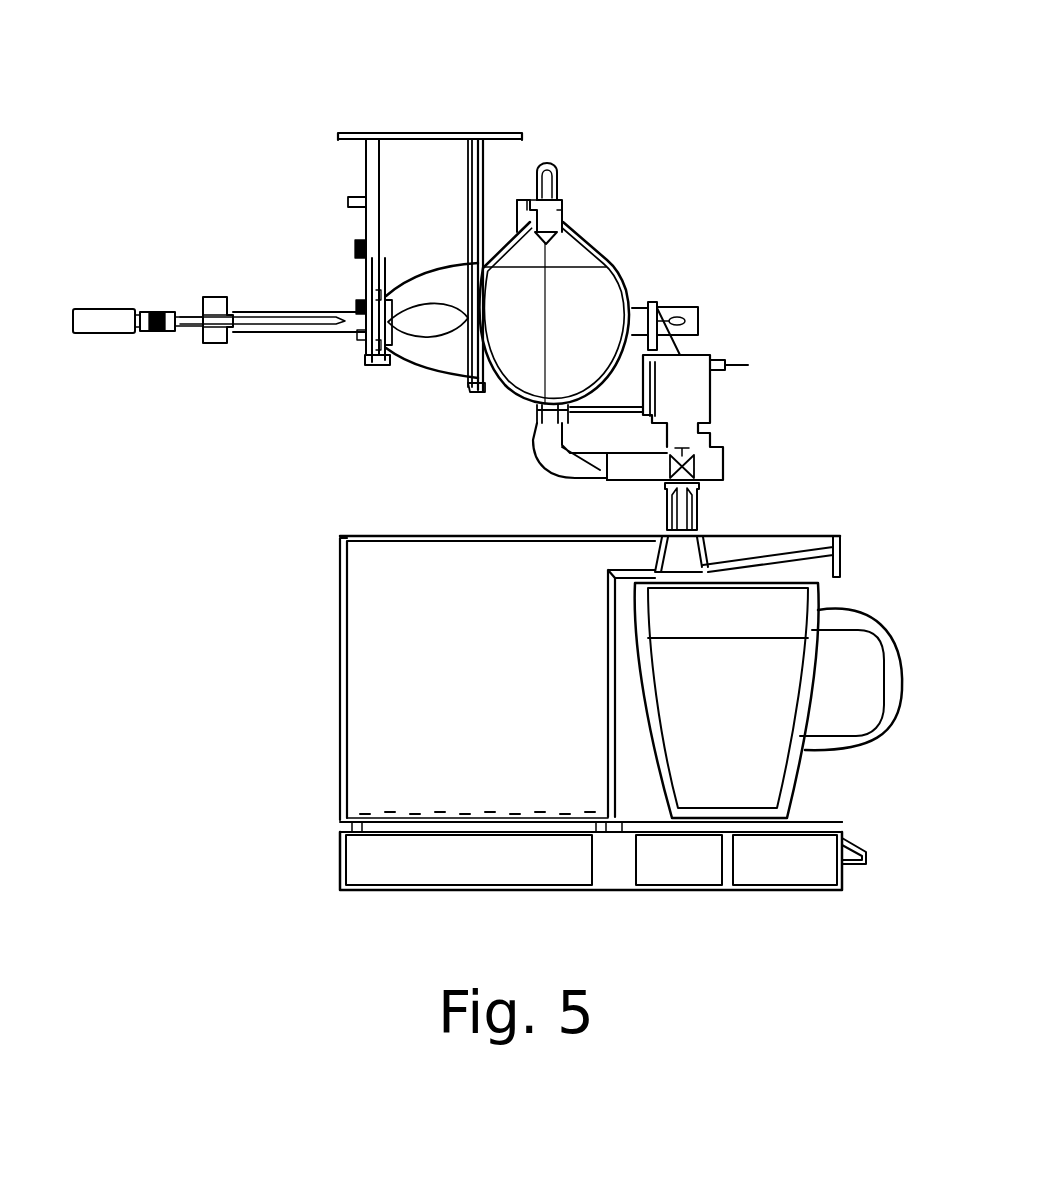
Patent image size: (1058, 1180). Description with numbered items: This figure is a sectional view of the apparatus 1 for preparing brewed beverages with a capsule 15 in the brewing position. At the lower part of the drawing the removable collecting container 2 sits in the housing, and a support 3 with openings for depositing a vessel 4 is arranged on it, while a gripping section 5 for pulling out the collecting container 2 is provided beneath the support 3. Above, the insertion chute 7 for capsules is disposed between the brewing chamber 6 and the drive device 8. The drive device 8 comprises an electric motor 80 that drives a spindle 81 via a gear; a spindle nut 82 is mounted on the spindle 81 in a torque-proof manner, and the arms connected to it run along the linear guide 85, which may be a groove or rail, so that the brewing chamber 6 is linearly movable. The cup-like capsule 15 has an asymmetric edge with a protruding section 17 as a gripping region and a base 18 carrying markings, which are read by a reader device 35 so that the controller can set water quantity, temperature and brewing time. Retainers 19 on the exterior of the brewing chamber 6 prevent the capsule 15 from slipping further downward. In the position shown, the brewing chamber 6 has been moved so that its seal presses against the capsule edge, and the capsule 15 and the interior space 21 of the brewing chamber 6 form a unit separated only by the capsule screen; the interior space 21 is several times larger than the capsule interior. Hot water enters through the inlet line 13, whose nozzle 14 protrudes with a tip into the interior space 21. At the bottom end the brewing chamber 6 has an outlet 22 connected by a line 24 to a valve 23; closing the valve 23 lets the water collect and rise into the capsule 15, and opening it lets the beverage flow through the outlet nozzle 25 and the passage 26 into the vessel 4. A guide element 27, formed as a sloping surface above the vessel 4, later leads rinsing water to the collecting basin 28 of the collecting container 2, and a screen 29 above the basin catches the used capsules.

The apparatus 1 is at (786, 242).
The collecting container 2 is at (340, 768).
The support 3 is at (808, 828).
The vessel 4 is at (812, 624).
The gripping section 5 is at (868, 855).
The brewing chamber 6 is at (622, 250).
The insertion chute 7 is at (428, 183).
The drive device 8 is at (158, 284).
The inlet line 13 is at (548, 178).
The nozzle 14 is at (562, 222).
The capsule 15 is at (412, 297).
The protruding section 17 is at (482, 253).
The base 18 is at (367, 356).
The retainers 19 is at (470, 380).
The interior space 21 is at (573, 315).
The outlet 22 is at (540, 410).
The valve 23 is at (686, 460).
The line 24 is at (534, 462).
The outlet nozzle 25 is at (685, 508).
The passage 26 is at (682, 560).
The guide element 27 is at (838, 550).
The collecting basin 28 is at (382, 857).
The screen 29 is at (340, 828).
The reader device 35 is at (380, 330).
The electric motor 80 is at (95, 322).
The spindle 81 is at (278, 325).
The spindle nut 82 is at (218, 305).
The linear guide 85 is at (678, 320).